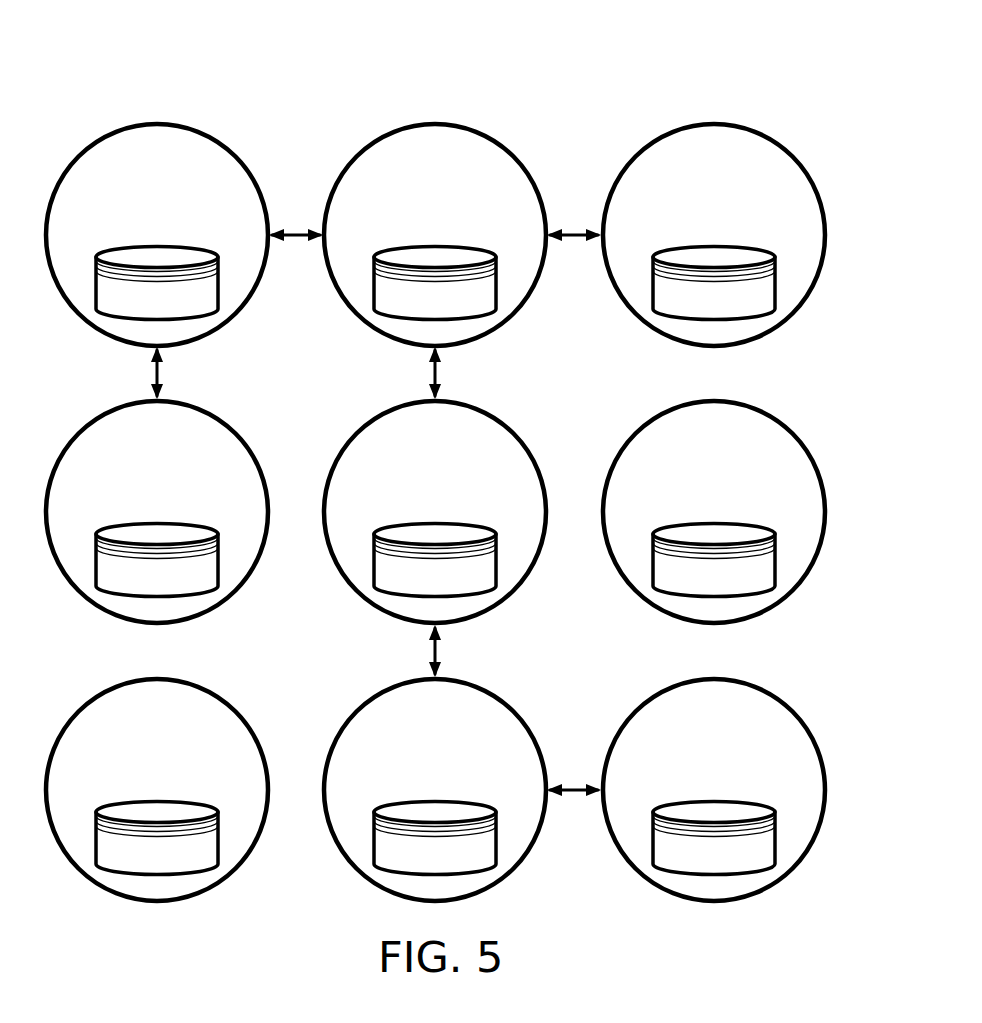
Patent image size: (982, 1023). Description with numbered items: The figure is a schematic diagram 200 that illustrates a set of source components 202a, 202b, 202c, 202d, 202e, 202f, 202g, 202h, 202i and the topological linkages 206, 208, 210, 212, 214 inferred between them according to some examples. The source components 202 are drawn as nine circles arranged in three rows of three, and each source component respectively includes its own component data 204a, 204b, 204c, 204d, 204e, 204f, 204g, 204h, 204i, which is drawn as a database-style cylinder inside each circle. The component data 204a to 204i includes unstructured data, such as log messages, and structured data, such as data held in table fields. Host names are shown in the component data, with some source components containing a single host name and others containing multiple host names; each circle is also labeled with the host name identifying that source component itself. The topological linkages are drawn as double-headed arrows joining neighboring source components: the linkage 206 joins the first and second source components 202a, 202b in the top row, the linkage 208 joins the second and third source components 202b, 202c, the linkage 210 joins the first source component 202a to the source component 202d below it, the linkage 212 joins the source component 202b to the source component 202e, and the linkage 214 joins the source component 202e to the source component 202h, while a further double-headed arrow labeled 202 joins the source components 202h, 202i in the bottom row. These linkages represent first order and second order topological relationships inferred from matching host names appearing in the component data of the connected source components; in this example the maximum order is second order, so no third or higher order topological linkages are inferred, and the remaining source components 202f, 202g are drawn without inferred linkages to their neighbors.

The schematic diagram 200 is at (682, 62).
The source component 202a is at (157, 215).
The source component 202b is at (435, 215).
The source component 202c is at (714, 215).
The source component 202d is at (157, 492).
The source component 202e is at (435, 492).
The source component 202f is at (714, 492).
The source component 202g is at (157, 770).
The source component 202h is at (435, 770).
The source component 202i is at (714, 770).
The component data 204a is at (179, 261).
The component data 204b is at (457, 261).
The component data 204c is at (736, 261).
The component data 204d is at (179, 538).
The component data 204e is at (457, 538).
The component data 204f is at (734, 538).
The component data 204g is at (179, 816).
The component data 204h is at (457, 816).
The component data 204i is at (733, 816).
The topological linkage 206 is at (294, 229).
The topological linkage 208 is at (575, 229).
The topological linkage 210 is at (152, 375).
The topological linkage 212 is at (430, 377).
The topological linkage 214 is at (430, 654).
The source component 202 is at (575, 785).